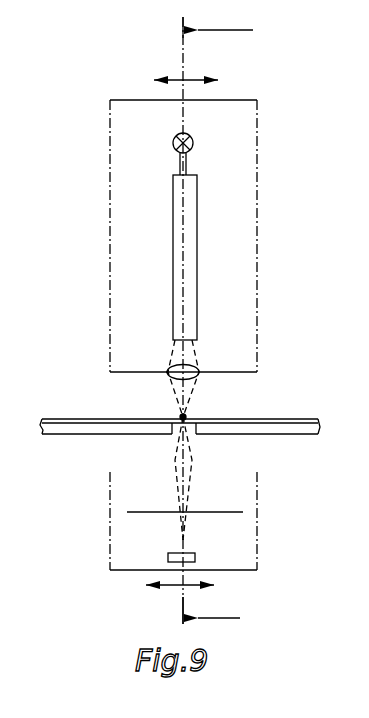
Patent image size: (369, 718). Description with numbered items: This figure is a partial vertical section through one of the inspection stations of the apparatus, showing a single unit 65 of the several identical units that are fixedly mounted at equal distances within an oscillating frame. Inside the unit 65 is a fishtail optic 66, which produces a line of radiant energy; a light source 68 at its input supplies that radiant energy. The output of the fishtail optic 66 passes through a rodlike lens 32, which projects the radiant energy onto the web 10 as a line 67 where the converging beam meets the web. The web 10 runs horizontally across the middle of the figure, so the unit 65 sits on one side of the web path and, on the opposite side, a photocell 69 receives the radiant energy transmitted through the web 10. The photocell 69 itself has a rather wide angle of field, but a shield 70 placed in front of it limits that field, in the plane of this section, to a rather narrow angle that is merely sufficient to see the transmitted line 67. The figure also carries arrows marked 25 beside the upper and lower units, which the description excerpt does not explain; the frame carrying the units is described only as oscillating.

The web 10 is at (52, 449).
The direction of movement 25 is at (164, 74).
The rodlike lens 32 is at (168, 372).
The unit 65 is at (133, 308).
The fishtail optic 66 is at (178, 243).
The line of radiant energy 67 is at (180, 416).
The light source 68 is at (173, 143).
The photocell 69 is at (168, 557).
The shield 70 is at (128, 512).